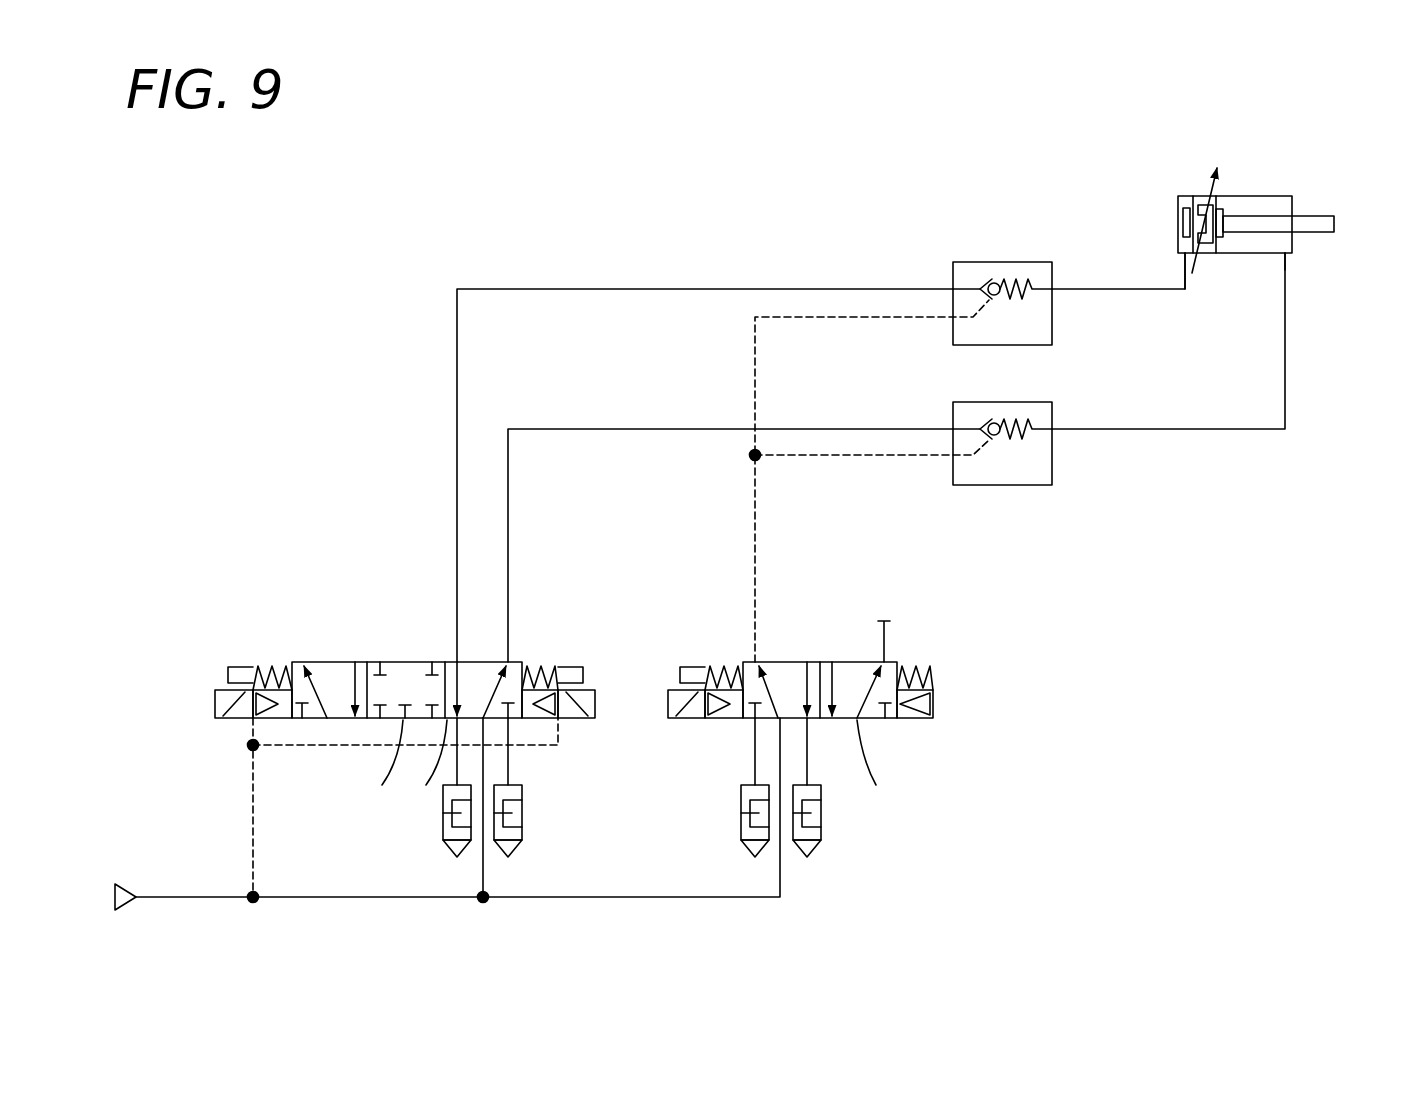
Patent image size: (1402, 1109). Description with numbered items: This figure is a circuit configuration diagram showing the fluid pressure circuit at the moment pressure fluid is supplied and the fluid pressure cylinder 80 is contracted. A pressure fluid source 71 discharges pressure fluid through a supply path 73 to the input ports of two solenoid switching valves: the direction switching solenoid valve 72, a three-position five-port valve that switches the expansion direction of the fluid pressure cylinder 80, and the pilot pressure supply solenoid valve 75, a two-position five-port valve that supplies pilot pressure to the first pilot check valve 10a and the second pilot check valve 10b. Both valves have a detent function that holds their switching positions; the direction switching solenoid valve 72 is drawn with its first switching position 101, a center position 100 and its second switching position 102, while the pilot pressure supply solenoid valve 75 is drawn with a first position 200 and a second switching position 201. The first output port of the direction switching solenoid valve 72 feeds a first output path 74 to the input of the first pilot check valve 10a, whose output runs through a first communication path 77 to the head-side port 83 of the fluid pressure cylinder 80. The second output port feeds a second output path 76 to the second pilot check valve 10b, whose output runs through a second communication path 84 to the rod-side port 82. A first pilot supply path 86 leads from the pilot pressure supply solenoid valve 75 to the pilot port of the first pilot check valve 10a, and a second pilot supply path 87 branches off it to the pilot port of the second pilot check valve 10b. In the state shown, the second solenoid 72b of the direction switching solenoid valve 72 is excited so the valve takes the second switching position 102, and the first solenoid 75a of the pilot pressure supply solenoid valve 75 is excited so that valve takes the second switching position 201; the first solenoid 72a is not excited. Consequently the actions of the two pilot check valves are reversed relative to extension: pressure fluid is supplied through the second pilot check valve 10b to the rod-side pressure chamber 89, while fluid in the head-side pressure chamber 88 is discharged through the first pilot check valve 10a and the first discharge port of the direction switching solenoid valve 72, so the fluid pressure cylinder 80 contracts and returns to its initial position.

The first pilot check valve 10a is at (988, 274).
The second pilot check valve 10b is at (990, 476).
The pressure fluid source 71 is at (130, 908).
The direction switching solenoid valve 72 is at (410, 740).
The first solenoid 72a is at (215, 720).
The second solenoid 72b is at (577, 720).
The supply path 73 is at (325, 899).
The first output path 74 is at (457, 365).
The pilot pressure supply solenoid valve 75 is at (833, 719).
The first solenoid 75a is at (703, 720).
The second output path 76 is at (586, 430).
The first communication path 77 is at (1142, 290).
The fluid pressure cylinder 80 is at (1236, 179).
The rod-side port 82 is at (1292, 255).
The head-side port 83 is at (1183, 262).
The second communication path 84 is at (1210, 431).
The first pilot supply path 86 is at (755, 365).
The second pilot supply path 87 is at (820, 457).
The head-side pressure chamber 88 is at (1186, 214).
The rod-side pressure chamber 89 is at (1276, 198).
The neutral position 100 is at (401, 662).
The first switching position 101 is at (324, 662).
The second switching position 102 is at (479, 662).
The first switching position 200 is at (848, 662).
The second switching position 201 is at (778, 662).